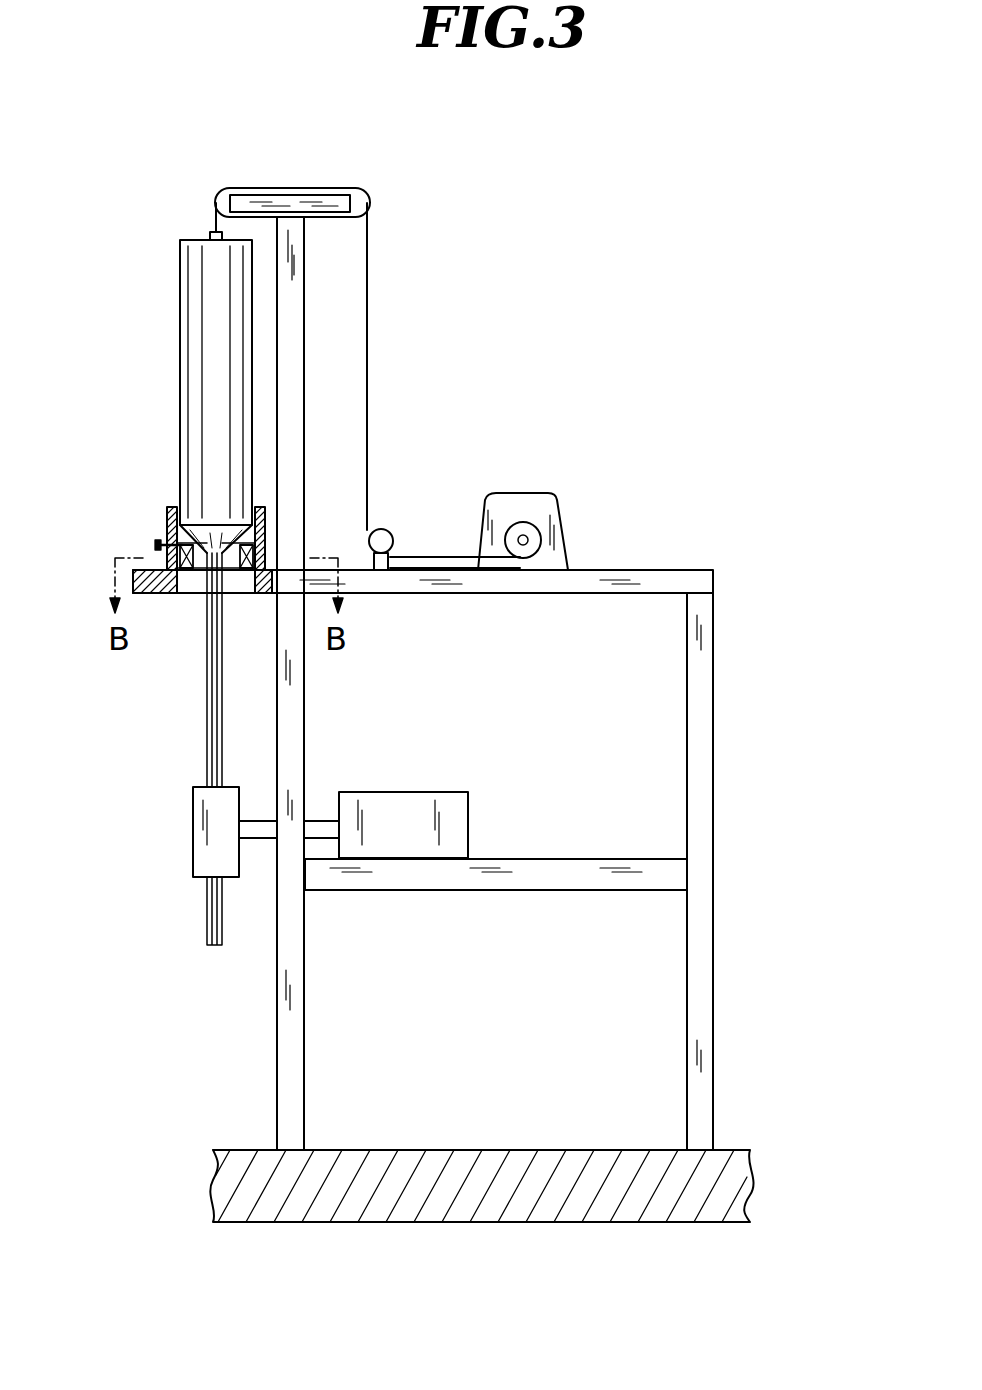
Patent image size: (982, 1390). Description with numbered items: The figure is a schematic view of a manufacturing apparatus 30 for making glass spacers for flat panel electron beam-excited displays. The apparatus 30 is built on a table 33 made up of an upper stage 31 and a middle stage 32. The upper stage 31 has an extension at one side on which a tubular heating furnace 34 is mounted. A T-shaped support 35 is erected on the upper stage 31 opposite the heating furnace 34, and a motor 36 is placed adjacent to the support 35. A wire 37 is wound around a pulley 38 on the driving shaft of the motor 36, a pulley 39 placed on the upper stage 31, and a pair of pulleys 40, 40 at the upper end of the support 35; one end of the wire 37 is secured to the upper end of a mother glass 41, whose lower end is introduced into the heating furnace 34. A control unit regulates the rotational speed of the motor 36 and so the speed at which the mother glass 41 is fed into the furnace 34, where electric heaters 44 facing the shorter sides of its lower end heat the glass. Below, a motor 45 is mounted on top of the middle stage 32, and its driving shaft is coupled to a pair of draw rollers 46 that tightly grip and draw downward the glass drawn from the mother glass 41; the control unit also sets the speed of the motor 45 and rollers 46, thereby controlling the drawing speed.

The manufacturing apparatus 30 is at (373, 465).
The upper stage 31 is at (650, 570).
The middle stage 32 is at (557, 882).
The table 33 is at (720, 785).
The tubular heating furnace 34 is at (167, 540).
The T-shaped support 35 is at (305, 367).
The motor 36 is at (530, 495).
The wire 37 is at (367, 260).
The pulley 38 is at (538, 572).
The pulley 39 is at (392, 531).
The pulleys 40 is at (222, 192).
The mother glass 41 is at (180, 365).
The electric heaters 44 is at (190, 593).
The motor 45 is at (408, 792).
The draw rollers 46 is at (193, 815).